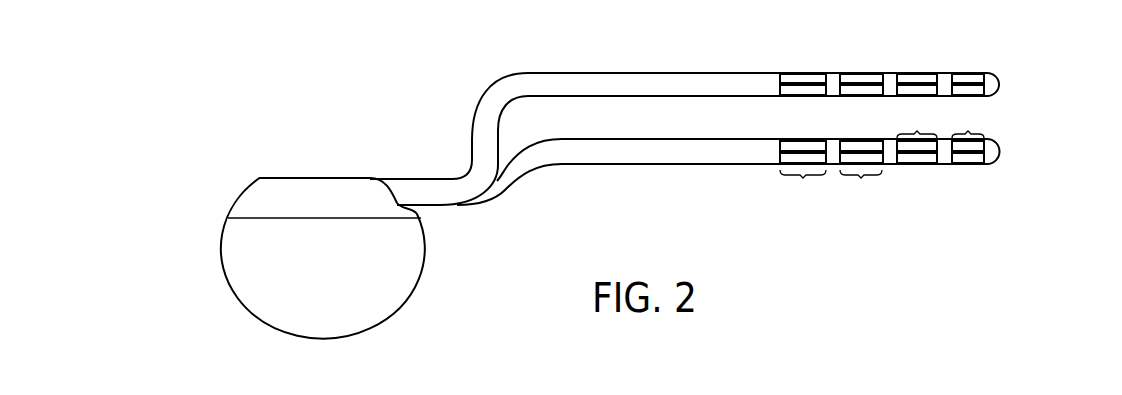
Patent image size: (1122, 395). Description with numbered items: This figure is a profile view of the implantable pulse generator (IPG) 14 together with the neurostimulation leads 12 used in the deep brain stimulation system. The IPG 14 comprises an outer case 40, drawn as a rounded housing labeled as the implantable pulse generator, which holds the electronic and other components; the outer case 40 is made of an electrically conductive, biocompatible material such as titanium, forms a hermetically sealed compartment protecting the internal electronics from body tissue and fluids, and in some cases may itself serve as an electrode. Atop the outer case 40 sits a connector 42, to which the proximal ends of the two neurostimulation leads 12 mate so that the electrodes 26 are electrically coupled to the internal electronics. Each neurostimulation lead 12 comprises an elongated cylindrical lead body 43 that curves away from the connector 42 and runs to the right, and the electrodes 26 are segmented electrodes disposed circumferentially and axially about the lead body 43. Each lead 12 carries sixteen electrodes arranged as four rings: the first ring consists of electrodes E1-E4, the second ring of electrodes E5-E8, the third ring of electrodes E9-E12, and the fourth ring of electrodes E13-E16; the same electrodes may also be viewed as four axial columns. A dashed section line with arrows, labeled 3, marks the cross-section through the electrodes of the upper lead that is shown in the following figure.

The implantable pulse generator 14 is at (264, 146).
The neurostimulation lead 12 is at (571, 66).
The electrodes 26 is at (905, 90).
The outer case 40 is at (420, 260).
The connector 42 is at (333, 181).
The lead body 43 is at (480, 147).
The section line for FIG. 3 is at (801, 115).
The electrodes E1-E4 is at (802, 187).
The electrodes E5-E8 is at (861, 178).
The electrodes E9-E12 is at (916, 120).
The electrodes E13-E16 is at (968, 133).